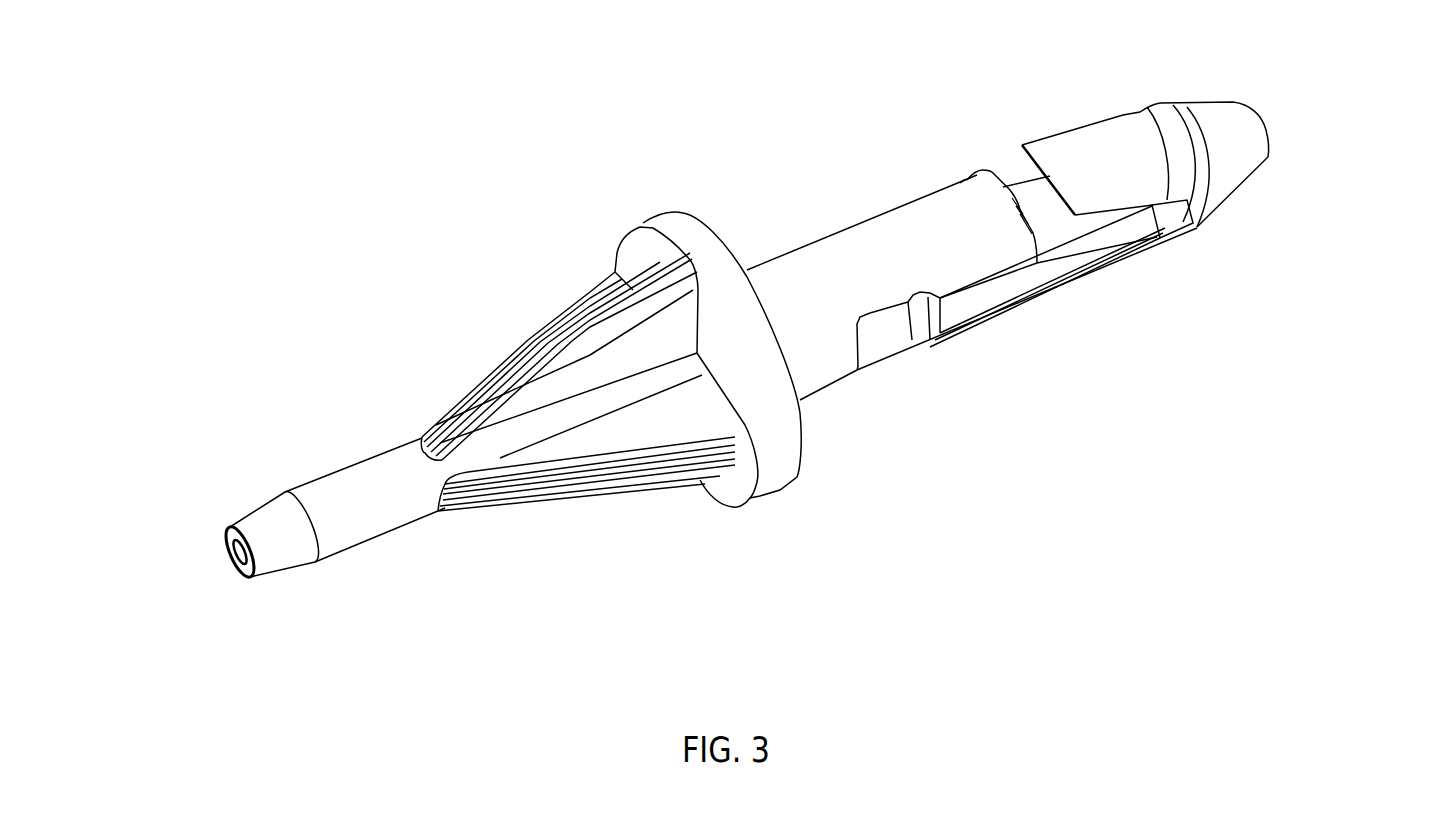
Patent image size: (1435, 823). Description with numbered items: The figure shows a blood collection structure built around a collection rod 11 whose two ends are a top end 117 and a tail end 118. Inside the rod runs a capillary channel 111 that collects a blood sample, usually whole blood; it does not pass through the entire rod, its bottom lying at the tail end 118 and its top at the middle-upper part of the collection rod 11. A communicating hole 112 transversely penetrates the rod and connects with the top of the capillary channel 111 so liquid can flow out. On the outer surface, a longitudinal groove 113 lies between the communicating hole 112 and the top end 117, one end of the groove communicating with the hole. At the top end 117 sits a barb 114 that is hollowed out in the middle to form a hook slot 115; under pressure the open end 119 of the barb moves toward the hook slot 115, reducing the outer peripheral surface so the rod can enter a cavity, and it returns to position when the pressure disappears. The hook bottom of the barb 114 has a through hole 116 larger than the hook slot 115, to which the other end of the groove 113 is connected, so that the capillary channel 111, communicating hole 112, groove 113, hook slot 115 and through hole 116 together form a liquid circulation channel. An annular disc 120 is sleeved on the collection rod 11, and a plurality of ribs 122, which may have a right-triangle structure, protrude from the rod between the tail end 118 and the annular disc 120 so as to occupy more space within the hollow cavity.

The collection rod 11 is at (377, 452).
The capillary channel 111 is at (223, 550).
The communicating hole 112 is at (882, 337).
The groove 113 is at (972, 298).
The barb 114 is at (1138, 167).
The hook slot 115 is at (1087, 227).
The through hole 116 is at (1173, 223).
The top end of the collection rod 117 is at (1247, 148).
The tail end of the collection rod 118 is at (272, 522).
The open end of the barb 119 is at (1060, 197).
The annular disc 120 is at (685, 245).
The ribs 122 is at (608, 323).